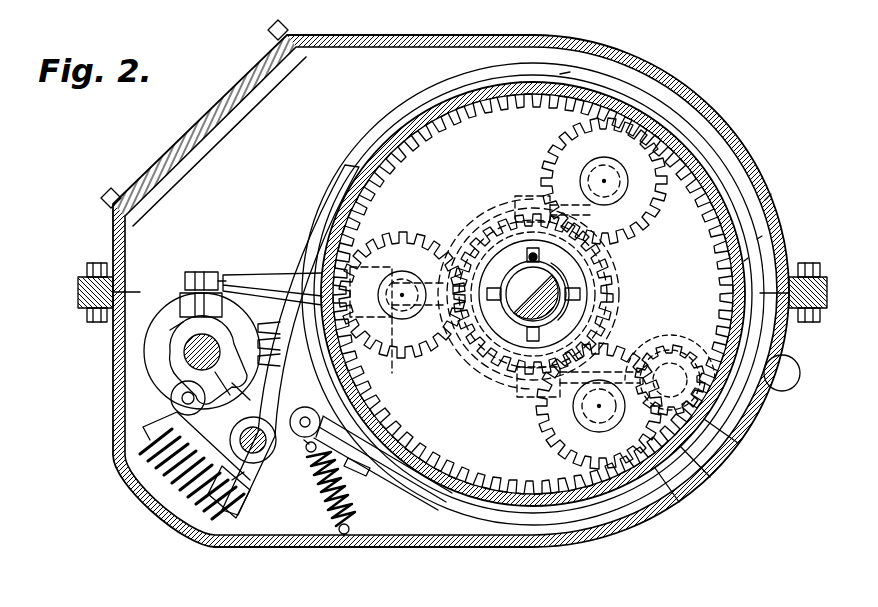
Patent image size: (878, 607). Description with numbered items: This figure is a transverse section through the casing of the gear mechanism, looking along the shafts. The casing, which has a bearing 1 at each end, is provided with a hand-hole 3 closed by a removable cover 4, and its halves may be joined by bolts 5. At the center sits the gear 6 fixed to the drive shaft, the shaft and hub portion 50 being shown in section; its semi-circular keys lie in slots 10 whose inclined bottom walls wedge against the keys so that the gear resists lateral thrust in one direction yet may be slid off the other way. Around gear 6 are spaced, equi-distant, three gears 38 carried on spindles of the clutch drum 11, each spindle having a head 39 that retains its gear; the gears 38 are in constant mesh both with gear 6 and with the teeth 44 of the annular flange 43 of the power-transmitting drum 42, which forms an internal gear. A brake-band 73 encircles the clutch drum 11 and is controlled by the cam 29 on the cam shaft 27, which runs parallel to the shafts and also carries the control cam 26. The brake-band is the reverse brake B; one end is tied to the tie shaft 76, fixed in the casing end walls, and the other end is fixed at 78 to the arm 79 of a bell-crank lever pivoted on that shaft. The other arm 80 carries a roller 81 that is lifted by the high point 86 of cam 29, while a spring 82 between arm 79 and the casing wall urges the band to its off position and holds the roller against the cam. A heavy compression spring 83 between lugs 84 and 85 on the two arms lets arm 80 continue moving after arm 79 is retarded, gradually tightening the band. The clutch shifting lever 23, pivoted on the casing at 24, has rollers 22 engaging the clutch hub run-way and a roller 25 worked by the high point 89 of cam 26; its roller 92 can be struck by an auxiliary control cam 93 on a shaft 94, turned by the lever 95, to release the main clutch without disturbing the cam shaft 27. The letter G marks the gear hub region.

The bearing 1 is at (437, 38).
The hand-hole 3 is at (208, 116).
The removable cover 4 is at (173, 147).
The bolt 5 is at (78, 290).
The gear 6 is at (596, 278).
The slot 10 is at (508, 278).
The clutch drum 11 is at (488, 132).
The lug or roller 22 is at (518, 208).
The clutch shifting lever 23 is at (243, 277).
The pivot 24 is at (312, 245).
The lug or roller 25 is at (197, 307).
The control cam 26 is at (148, 337).
The cam shaft 27 is at (195, 350).
The cam 29 is at (215, 372).
The gear 38 is at (409, 335).
The head 39 is at (690, 144).
The power-transmitting drum 42 is at (773, 193).
The annular flange 43 is at (748, 258).
The teeth 44 is at (762, 236).
The hub 50 is at (583, 336).
The brake-band 73 is at (580, 63).
The tie shaft 76 is at (258, 465).
The fixing point 78 is at (307, 414).
The arm 79 is at (298, 455).
The arm 80 is at (203, 424).
The roller 81 is at (170, 398).
The spring 82 is at (327, 493).
The compression spring 83 is at (177, 483).
The lug 84 is at (230, 518).
The lug 85 is at (143, 440).
The high point 86 is at (232, 383).
The high point 89 is at (183, 322).
The lug or roller 92 is at (688, 503).
The auxiliary control cam 93 is at (708, 493).
The shaft 94 is at (742, 447).
The lever 95 is at (785, 392).
The reverse brake B is at (533, 300).
The gear hub key G is at (592, 321).